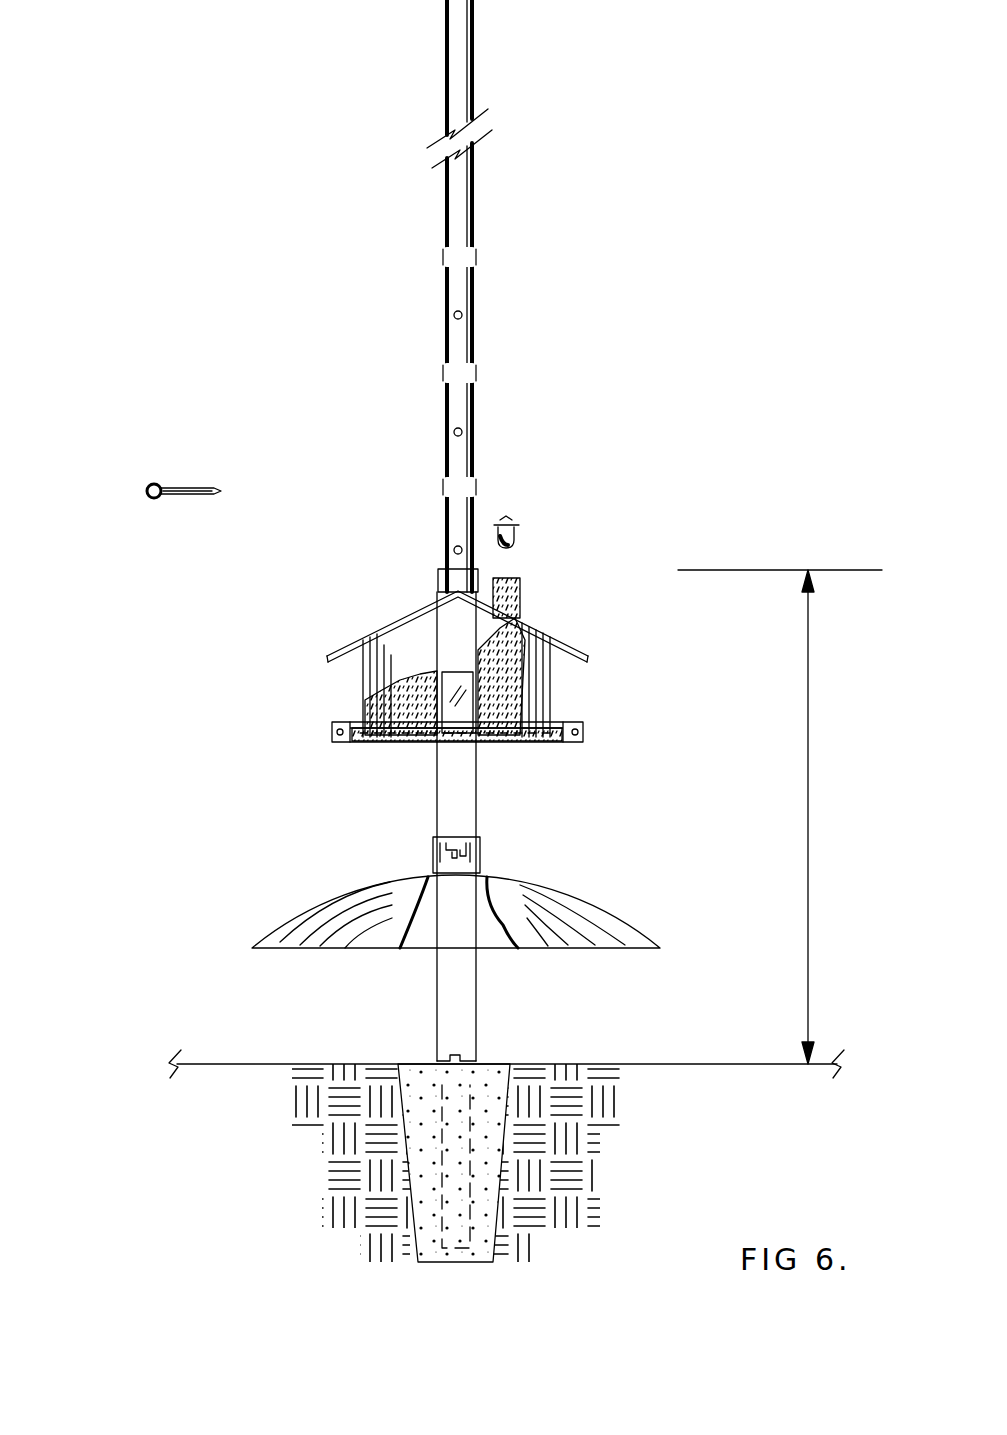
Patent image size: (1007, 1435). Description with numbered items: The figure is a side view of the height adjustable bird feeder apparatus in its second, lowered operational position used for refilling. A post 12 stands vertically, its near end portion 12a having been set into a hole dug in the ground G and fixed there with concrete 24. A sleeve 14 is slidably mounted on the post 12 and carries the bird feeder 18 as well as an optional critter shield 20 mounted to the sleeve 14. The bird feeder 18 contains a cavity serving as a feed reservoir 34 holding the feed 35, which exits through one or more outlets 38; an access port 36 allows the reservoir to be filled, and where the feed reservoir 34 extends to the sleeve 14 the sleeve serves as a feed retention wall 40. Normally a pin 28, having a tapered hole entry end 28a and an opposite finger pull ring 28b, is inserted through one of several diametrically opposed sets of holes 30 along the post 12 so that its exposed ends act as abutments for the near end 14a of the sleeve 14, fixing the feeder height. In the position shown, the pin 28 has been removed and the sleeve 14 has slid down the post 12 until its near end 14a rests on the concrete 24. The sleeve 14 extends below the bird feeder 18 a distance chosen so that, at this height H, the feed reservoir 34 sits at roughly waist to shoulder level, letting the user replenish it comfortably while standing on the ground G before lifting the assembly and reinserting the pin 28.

The post 12 is at (520, 318).
The near end portion of the post 12a is at (482, 1134).
The sleeve 14 is at (490, 802).
The near end of the sleeve 14a is at (422, 1075).
The bird feeder 18 is at (485, 651).
The critter shield 20 is at (660, 922).
The concrete 24 is at (498, 1208).
The pin 28 is at (183, 436).
The tapered hole entry end 28a is at (222, 492).
The finger pull ring 28b is at (145, 495).
The holes 30 is at (478, 256).
The feed reservoir 34 is at (402, 643).
The feed 35 is at (403, 690).
The access port 36 is at (522, 545).
The outlets 38 is at (390, 740).
The feed retention wall 40 is at (437, 642).
The ground G is at (672, 1048).
The height H is at (808, 800).